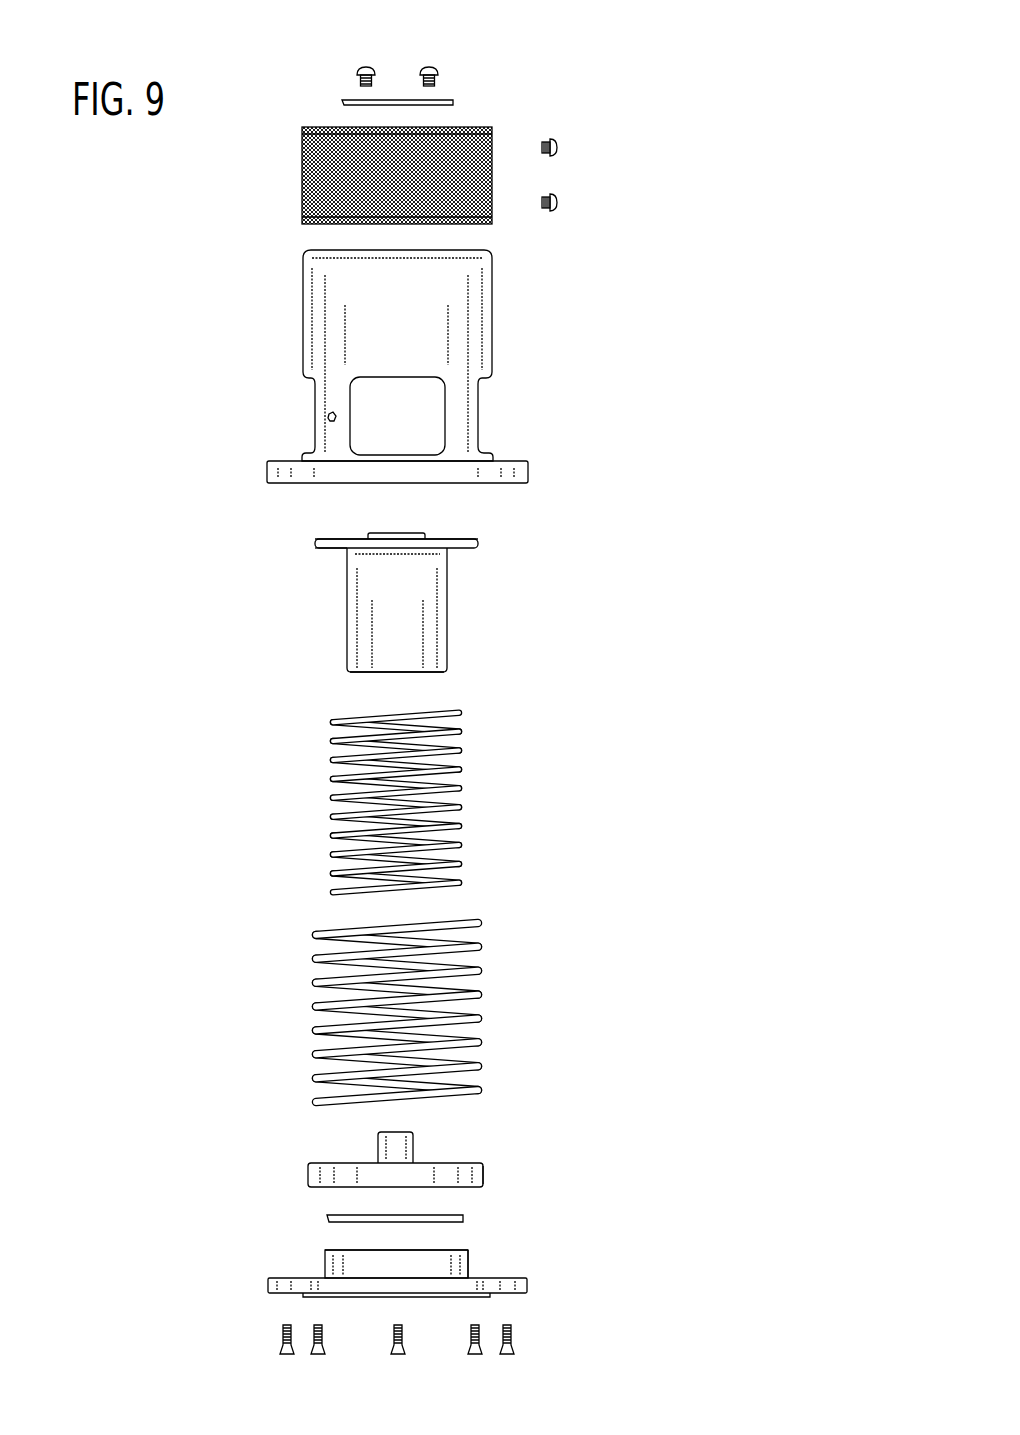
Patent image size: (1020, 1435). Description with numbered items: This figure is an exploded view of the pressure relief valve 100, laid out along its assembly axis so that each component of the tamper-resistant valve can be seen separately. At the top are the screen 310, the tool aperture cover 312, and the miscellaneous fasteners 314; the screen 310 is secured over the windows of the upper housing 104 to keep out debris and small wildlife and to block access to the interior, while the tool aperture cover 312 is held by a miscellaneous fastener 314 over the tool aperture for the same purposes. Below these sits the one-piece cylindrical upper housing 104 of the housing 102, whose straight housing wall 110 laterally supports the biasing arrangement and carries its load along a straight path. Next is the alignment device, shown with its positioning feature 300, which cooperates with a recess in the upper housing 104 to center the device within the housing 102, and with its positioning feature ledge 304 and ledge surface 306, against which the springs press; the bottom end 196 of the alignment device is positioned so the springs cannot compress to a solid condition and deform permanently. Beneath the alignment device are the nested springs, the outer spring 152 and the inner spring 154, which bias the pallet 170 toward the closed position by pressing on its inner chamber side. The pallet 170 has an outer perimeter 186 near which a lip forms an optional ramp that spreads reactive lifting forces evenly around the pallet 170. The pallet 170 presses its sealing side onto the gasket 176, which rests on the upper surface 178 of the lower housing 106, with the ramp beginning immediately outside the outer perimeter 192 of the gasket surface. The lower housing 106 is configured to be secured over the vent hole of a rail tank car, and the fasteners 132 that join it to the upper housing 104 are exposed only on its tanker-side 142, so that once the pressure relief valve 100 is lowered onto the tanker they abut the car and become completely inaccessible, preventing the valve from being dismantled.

The pressure relief valve 100 is at (715, 125).
The housing 102 is at (303, 320).
The upper housing 104 is at (397, 366).
The lower housing 106 is at (325, 1262).
The housing wall 110 is at (397, 366).
The fasteners 132 is at (282, 1335).
The tanker-side 142 is at (518, 1293).
The outer spring 152 is at (313, 1018).
The inner spring 154 is at (330, 790).
The pallet 170 is at (308, 1170).
The gasket 176 is at (327, 1218).
The upper surface 178 is at (444, 1250).
The outer perimeter 186 is at (484, 1170).
The outer perimeter 192 is at (468, 1266).
The bottom end 196 is at (428, 672).
The positioning feature 300 is at (397, 533).
The positioning feature ledge 304 is at (455, 538).
The ledge surface 306 is at (325, 549).
The screen 310 is at (302, 182).
The tool aperture cover 312 is at (342, 102).
The miscellaneous fastener 314 is at (357, 78).